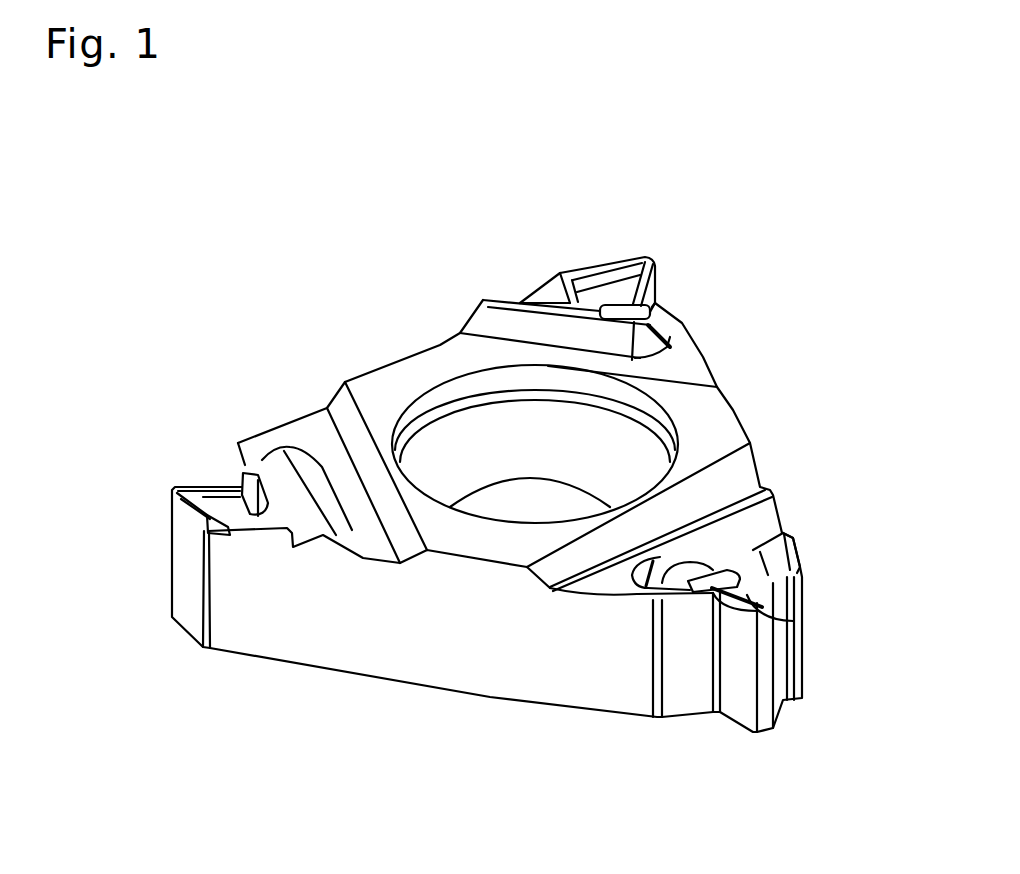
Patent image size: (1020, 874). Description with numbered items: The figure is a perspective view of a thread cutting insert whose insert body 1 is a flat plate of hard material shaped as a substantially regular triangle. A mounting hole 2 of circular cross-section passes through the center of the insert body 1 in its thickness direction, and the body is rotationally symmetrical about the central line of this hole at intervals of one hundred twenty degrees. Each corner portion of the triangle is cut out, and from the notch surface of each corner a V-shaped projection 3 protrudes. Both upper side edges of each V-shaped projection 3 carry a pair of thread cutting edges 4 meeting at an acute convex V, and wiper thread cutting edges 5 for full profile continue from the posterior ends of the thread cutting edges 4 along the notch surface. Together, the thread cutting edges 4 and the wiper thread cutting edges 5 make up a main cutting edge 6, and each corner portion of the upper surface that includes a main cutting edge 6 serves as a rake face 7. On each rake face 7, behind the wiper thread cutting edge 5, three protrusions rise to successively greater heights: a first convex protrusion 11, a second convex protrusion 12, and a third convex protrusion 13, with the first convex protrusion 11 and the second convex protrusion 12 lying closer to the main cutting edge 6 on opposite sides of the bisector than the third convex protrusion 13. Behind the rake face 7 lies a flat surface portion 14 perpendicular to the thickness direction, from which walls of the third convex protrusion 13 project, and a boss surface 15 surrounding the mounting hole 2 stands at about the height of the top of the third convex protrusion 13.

The insert body 1 is at (388, 283).
The mounting hole 2 is at (466, 428).
The V-shaped projection 3 is at (145, 582).
The thread cutting edge 4 is at (215, 495).
The wiper thread cutting edge for full profile 5 is at (237, 477).
The main cutting edge 6 is at (725, 182).
The rake face 7 is at (575, 250).
The first convex protrusion 11 is at (657, 303).
The second convex protrusion 12 is at (537, 287).
The third convex protrusion 13 is at (507, 293).
The flat surface portion 14 is at (692, 368).
The boss surface 15 is at (433, 342).